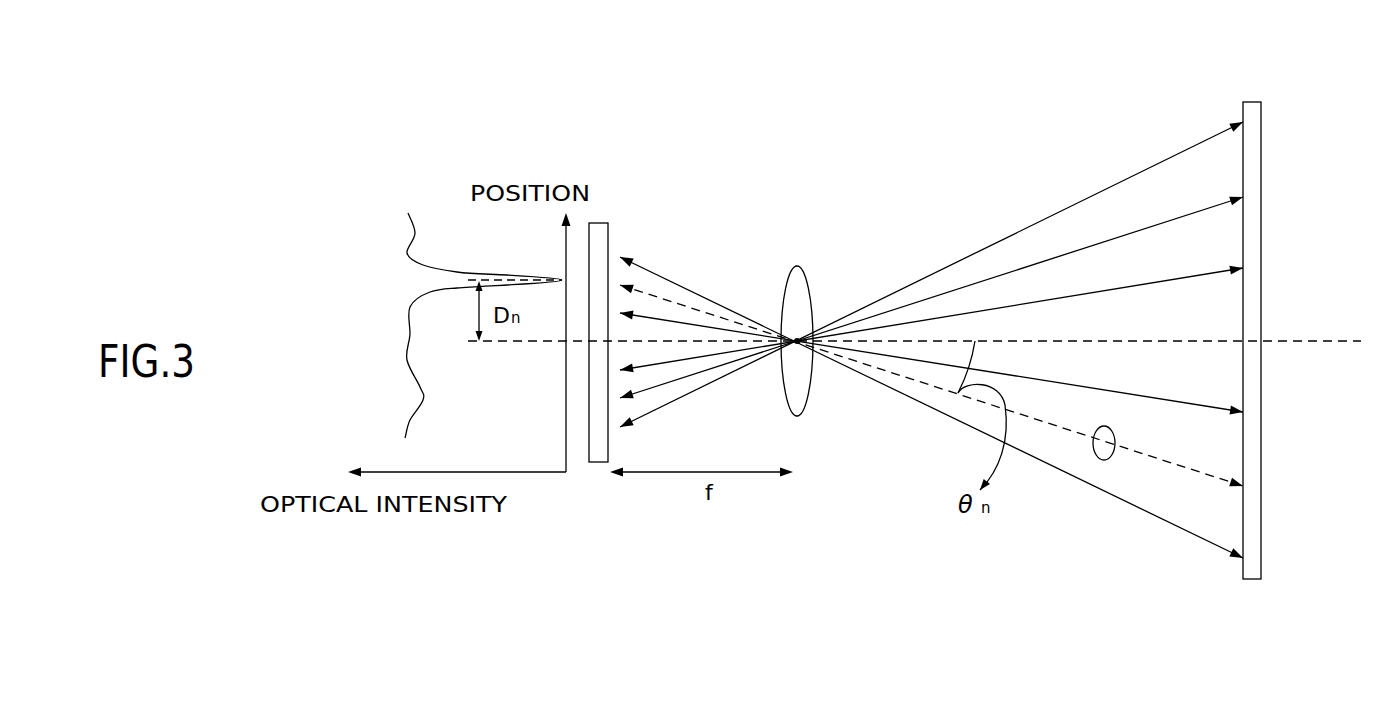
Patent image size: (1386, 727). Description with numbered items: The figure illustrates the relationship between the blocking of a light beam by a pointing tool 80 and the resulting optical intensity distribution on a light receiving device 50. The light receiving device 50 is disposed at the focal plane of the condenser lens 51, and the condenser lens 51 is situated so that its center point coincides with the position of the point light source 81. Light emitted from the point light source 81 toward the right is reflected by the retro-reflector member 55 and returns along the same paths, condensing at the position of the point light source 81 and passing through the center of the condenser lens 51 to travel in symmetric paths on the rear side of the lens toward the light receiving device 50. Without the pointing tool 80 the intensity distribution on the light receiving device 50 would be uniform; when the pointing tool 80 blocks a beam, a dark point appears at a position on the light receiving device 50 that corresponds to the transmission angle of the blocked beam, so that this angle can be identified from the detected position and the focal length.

The light receiving device 50 is at (600, 223).
The condenser lens 51 is at (797, 267).
The retro-reflector member 55 is at (1253, 102).
The pointing tool 80 is at (1104, 460).
The point light source 81 is at (813, 337).